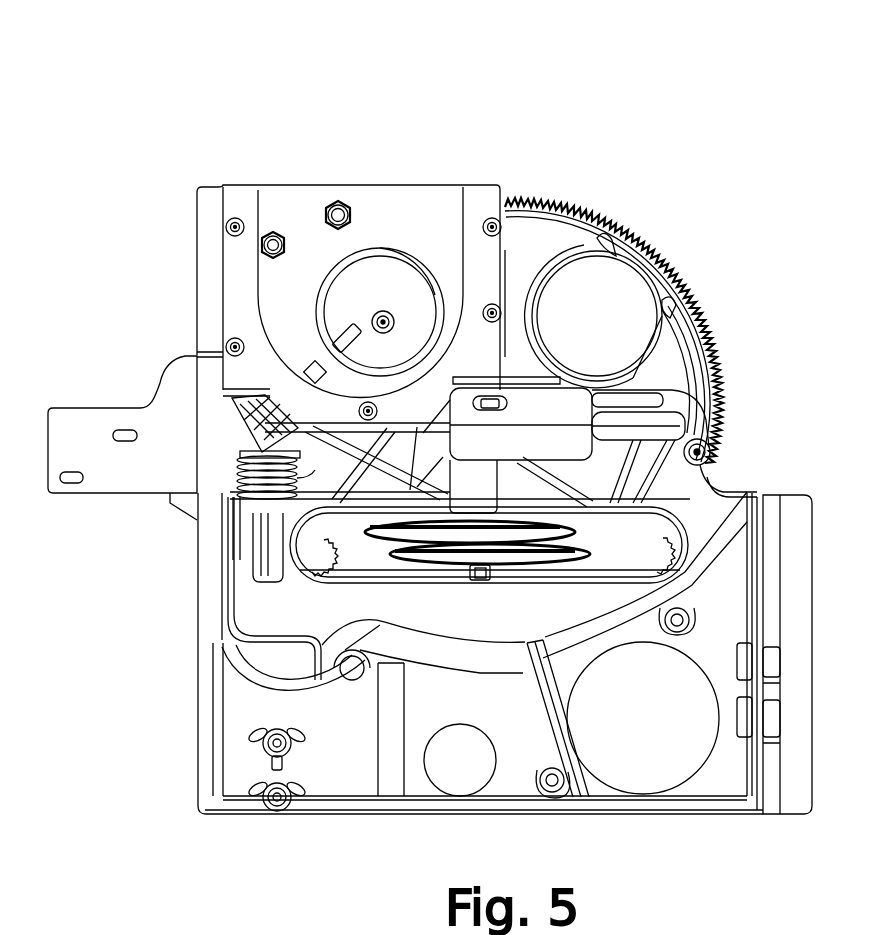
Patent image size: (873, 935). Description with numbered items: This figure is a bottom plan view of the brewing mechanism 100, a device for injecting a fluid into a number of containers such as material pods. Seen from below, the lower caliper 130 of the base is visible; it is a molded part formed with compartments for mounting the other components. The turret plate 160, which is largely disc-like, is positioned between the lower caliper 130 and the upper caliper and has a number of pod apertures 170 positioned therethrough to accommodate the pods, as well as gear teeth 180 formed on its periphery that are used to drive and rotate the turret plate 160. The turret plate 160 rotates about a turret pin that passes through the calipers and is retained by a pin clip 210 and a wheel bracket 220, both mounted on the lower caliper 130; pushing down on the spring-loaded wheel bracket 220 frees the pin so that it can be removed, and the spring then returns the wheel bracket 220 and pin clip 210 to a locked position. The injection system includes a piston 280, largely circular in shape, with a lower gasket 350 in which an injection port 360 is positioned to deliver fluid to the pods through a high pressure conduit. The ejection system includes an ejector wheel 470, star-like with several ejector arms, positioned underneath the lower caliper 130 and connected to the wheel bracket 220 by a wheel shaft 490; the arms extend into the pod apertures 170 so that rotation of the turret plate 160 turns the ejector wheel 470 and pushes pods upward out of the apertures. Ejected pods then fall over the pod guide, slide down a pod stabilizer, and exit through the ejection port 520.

The brewing mechanism 100 is at (190, 104).
The lower caliper 130 is at (241, 813).
The turret plate 160 is at (573, 203).
The pod apertures 170 is at (619, 329).
The gear teeth 180 is at (609, 236).
The pin clip 210 is at (460, 402).
The wheel bracket 220 is at (484, 492).
The piston 280 is at (380, 250).
The lower gasket 350 is at (413, 288).
The injection port 360 is at (376, 319).
The ejector wheel 470 is at (568, 556).
The wheel shaft 490 is at (478, 582).
The ejection port 520 is at (659, 728).